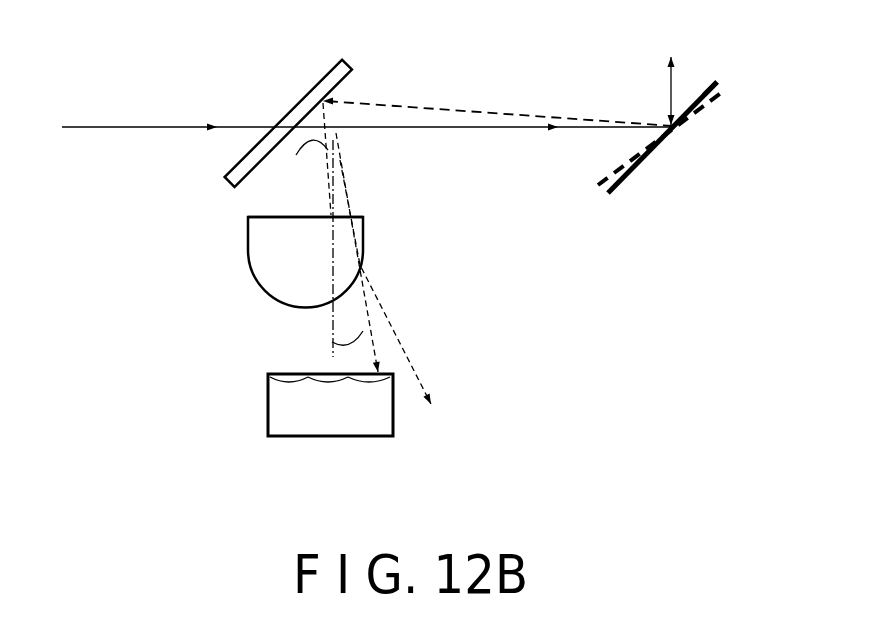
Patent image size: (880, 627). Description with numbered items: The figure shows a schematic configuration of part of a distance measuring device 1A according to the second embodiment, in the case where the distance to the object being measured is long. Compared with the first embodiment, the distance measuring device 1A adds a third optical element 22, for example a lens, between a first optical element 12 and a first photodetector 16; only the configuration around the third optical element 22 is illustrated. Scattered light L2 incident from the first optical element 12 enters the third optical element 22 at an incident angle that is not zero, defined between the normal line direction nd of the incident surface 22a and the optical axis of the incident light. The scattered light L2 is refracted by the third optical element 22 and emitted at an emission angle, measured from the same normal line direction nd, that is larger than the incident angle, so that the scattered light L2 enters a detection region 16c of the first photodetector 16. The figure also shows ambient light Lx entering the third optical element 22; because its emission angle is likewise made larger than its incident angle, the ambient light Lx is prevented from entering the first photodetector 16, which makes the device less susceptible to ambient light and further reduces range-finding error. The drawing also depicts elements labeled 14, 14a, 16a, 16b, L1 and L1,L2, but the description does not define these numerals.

The distance measuring device 1A is at (592, 310).
The first optical element 12 is at (318, 80).
The reflecting element 14 is at (732, 80).
The reflecting surface 14a is at (705, 82).
The first photodetector 16 is at (267, 398).
The first light receiving region 16a is at (288, 382).
The second light receiving region 16b is at (328, 382).
The detection region 16c is at (370, 382).
The third optical element 22 is at (247, 272).
The incident surface 22a is at (265, 217).
The first light beam L1 is at (178, 128).
The scattered light L2 is at (420, 108).
The ambient light Lx is at (345, 175).
The normal line direction nd is at (333, 323).
The light beams L1 and L2 L1,L2 is at (670, 93).